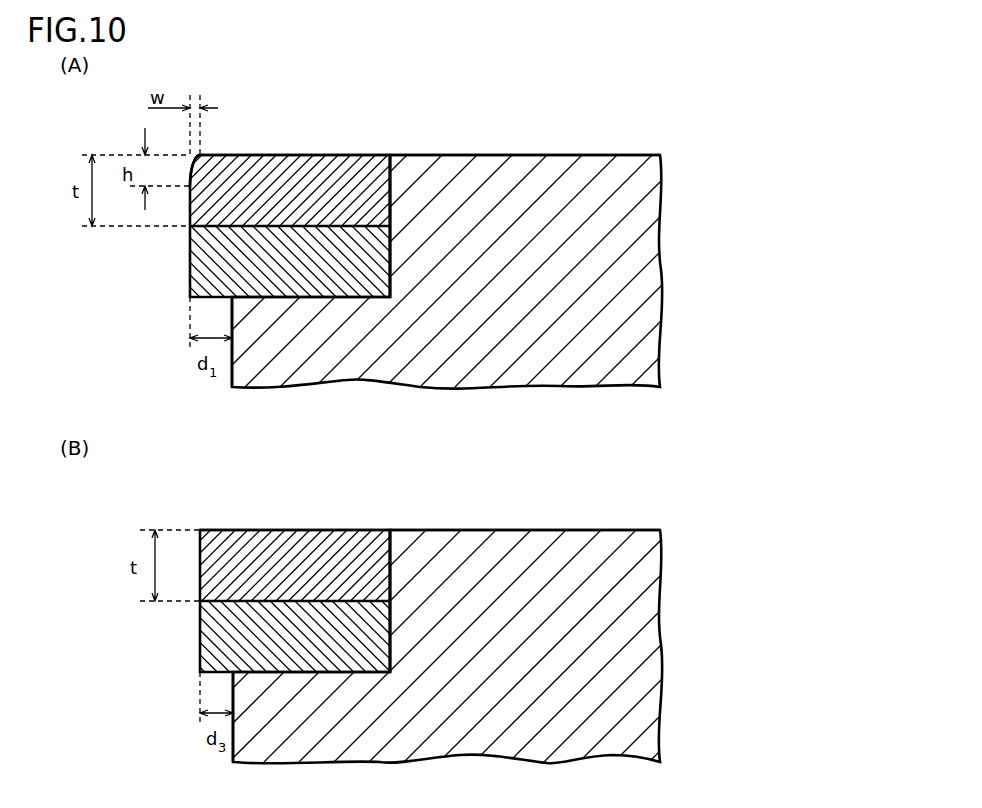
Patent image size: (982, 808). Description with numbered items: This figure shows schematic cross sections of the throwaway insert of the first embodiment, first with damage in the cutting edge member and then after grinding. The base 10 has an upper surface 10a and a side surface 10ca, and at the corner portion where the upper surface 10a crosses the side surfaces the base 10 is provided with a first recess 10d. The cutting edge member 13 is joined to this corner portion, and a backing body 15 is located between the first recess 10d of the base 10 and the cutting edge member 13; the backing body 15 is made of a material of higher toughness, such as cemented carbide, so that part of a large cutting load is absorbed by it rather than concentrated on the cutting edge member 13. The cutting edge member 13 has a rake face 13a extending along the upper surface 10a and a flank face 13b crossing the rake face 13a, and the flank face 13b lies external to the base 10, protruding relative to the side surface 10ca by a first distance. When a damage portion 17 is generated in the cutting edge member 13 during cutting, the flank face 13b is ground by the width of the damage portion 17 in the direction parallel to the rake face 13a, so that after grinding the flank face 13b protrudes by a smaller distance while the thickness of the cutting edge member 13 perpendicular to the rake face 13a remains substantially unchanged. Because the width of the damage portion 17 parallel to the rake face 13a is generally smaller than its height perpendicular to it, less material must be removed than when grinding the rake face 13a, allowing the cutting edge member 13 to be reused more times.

The base 10 is at (594, 200).
The upper surface 10a is at (545, 160).
The first recess 10d is at (390, 277).
The side surface 10ca is at (232, 362).
The cutting edge member 13 is at (316, 165).
The rake face 13a is at (273, 162).
The flank face 13b is at (190, 203).
The backing body 15 is at (357, 258).
The damage portion 17 is at (210, 163).